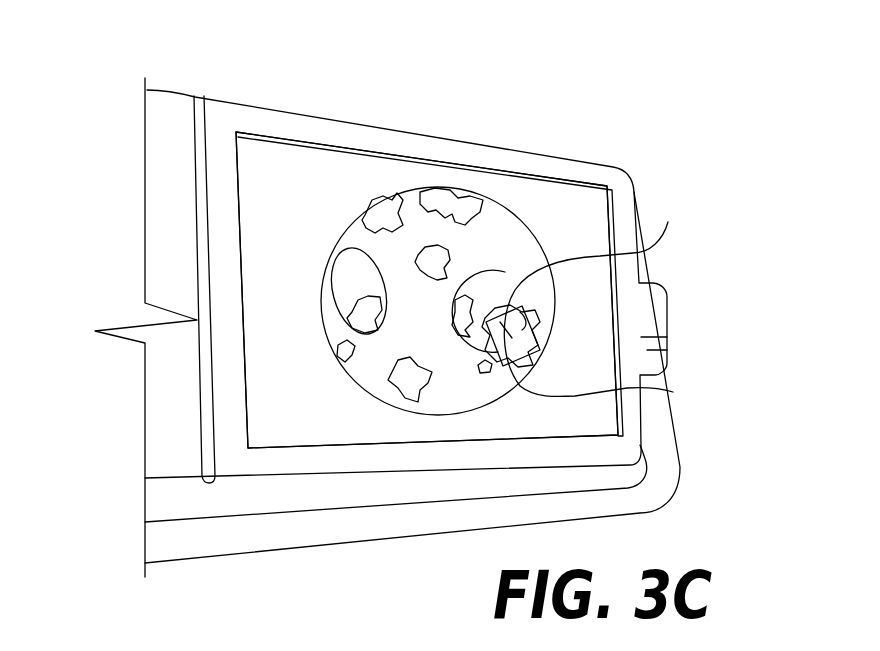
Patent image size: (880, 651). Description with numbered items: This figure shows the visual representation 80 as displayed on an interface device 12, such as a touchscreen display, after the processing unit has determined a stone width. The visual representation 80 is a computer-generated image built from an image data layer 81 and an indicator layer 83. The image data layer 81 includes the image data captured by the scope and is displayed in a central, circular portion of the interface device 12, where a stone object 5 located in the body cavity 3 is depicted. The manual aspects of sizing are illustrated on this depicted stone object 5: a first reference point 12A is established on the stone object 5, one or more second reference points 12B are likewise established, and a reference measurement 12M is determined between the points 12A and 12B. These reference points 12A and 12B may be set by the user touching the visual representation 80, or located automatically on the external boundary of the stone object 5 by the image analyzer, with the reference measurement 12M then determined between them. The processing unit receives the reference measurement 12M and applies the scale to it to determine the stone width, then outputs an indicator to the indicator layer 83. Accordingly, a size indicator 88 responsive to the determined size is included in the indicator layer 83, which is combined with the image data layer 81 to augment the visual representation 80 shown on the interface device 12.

The interface device 12 is at (227, 123).
The visual representation 80 is at (331, 170).
The image data layer 81 is at (493, 203).
The indicator layer 83 is at (273, 225).
The stone object 5 is at (631, 320).
The first reference point 12A is at (520, 305).
The reference measurement 12M is at (525, 327).
The second reference point 12B is at (673, 392).
The size indicator 88 is at (262, 398).
The body cavity 3 is at (448, 395).